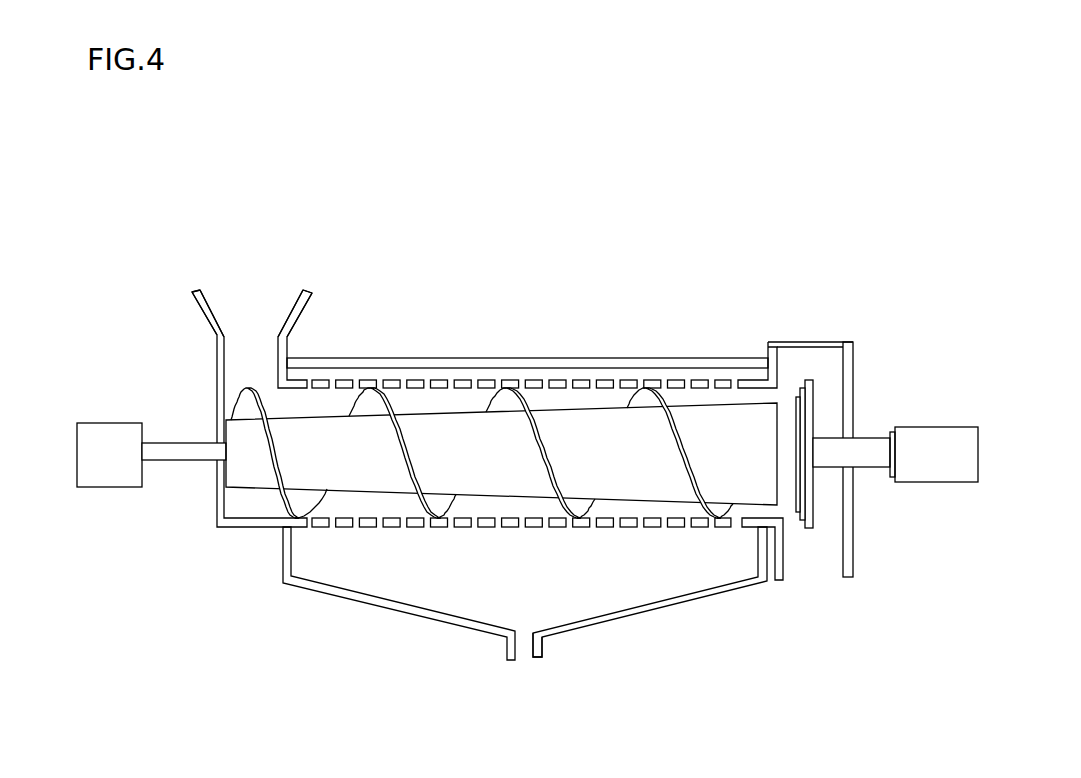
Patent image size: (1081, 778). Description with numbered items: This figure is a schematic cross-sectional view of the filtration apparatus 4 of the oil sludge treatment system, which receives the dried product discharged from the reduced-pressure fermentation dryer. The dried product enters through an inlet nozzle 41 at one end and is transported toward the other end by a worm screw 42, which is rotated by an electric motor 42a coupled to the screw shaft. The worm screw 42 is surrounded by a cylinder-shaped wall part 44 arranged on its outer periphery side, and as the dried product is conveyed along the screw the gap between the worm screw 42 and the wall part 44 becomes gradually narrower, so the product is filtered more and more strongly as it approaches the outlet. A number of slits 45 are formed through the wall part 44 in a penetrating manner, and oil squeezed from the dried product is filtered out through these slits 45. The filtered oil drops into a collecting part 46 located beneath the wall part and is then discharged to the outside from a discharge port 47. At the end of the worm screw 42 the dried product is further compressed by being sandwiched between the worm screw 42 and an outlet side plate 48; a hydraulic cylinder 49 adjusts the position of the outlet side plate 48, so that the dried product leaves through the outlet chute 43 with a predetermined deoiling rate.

The filtration apparatus 4 is at (617, 333).
The inlet nozzle 41 is at (211, 312).
The worm screw 42 is at (470, 430).
The electric motor 42a is at (98, 442).
The outlet chute 43 is at (837, 512).
The cylinder-shaped wall part 44 is at (374, 384).
The slits 45 is at (377, 530).
The collecting part 46 is at (642, 580).
The discharge port 47 is at (545, 653).
The outlet side plate 48 is at (815, 420).
The hydraulic cylinder 49 is at (965, 462).